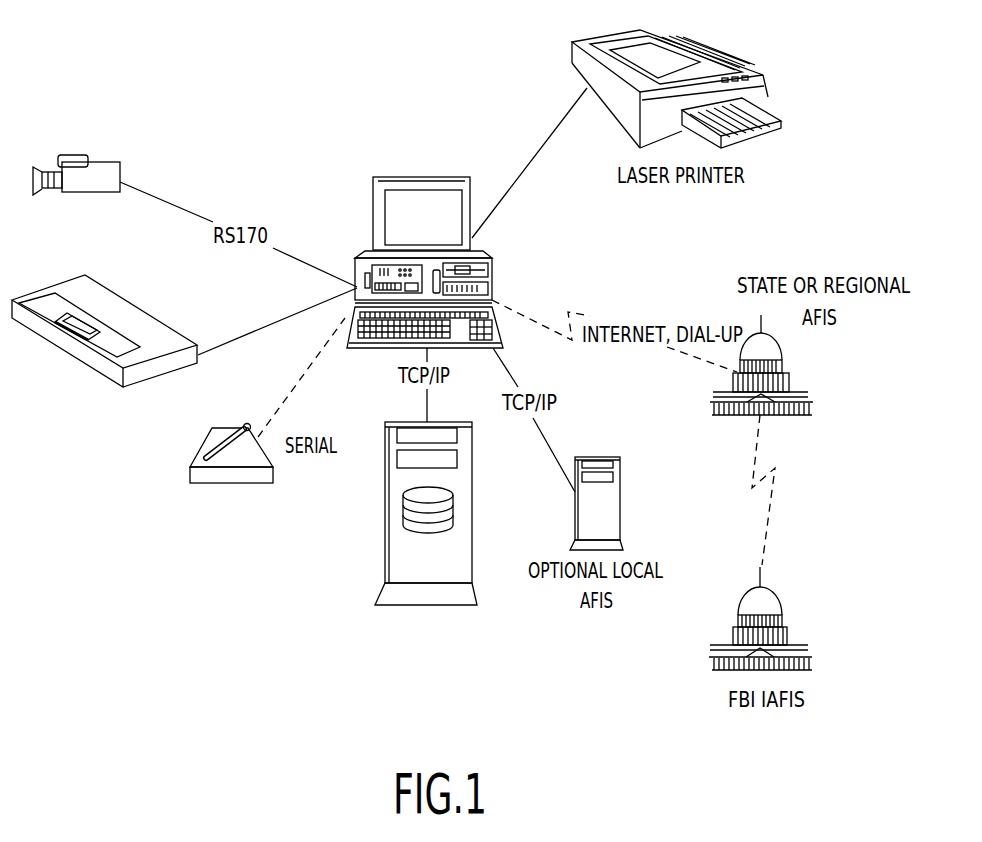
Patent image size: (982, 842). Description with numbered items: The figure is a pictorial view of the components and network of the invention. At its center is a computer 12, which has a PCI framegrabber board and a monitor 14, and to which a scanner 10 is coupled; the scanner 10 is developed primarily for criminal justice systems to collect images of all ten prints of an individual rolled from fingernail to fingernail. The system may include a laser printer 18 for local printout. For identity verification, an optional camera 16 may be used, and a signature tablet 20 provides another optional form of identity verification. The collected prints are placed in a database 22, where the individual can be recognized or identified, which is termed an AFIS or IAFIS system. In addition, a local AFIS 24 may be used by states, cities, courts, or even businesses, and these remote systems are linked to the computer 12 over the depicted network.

The scanner 10 is at (110, 383).
The computer 12 is at (494, 277).
The monitor 14 is at (428, 176).
The camera 16 is at (121, 165).
The laser printer 18 is at (758, 90).
The signature tablet 20 is at (229, 483).
The database 22 is at (416, 605).
The local AFIS 24 is at (621, 496).